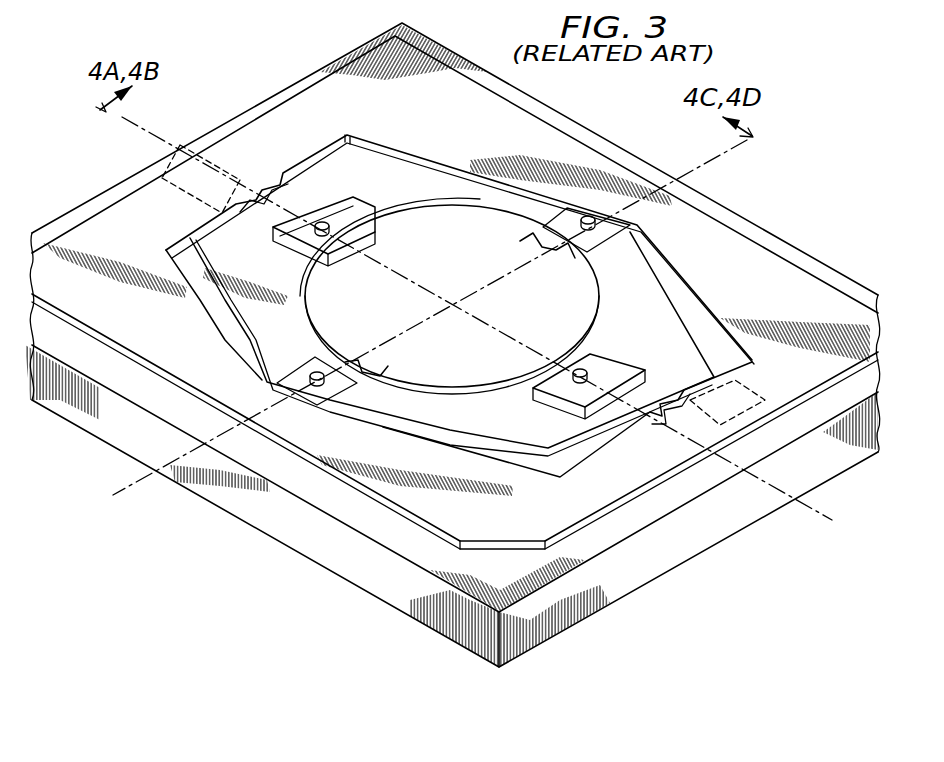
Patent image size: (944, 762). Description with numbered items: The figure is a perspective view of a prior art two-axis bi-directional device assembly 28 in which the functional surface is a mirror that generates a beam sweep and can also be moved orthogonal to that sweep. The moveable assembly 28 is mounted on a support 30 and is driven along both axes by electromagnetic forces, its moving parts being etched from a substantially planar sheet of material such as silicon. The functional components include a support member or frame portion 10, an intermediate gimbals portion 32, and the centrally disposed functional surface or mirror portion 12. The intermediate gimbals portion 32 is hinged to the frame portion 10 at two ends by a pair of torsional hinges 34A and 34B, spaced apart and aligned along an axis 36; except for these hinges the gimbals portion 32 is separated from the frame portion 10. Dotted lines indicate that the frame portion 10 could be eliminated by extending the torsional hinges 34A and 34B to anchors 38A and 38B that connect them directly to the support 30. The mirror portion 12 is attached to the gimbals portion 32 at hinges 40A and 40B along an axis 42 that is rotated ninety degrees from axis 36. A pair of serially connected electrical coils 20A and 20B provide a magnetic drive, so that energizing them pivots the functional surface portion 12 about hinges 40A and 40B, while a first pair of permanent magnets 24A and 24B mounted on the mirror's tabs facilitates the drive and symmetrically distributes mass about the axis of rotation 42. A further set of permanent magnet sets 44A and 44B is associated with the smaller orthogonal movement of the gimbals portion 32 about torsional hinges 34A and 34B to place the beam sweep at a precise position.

The frame portion 10 is at (745, 283).
The mirror portion 12 is at (373, 312).
The electrical coil 20A is at (358, 200).
The electrical coil 20B is at (620, 357).
The permanent magnet 24A is at (362, 236).
The permanent magnet 24B is at (580, 368).
The two-axis bi-directional device assembly 28 is at (788, 200).
The support 30 is at (253, 112).
The intermediate gimbals portion 32 is at (428, 180).
The torsional hinge 34A is at (250, 202).
The torsional hinge 34B is at (654, 430).
The axis 36 is at (140, 124).
The anchor 38A is at (232, 160).
The anchor 38B is at (705, 412).
The hinge 40A is at (366, 362).
The hinge 40B is at (560, 258).
The axis 42 is at (716, 155).
The permanent magnet set 44A is at (316, 368).
The permanent magnet set 44B is at (578, 216).